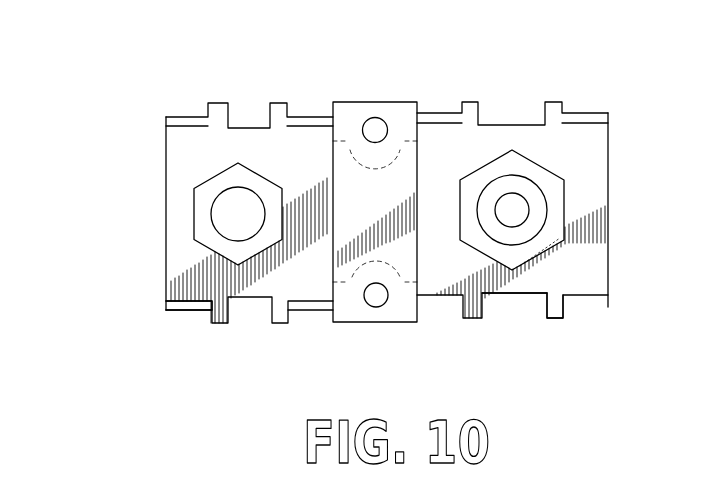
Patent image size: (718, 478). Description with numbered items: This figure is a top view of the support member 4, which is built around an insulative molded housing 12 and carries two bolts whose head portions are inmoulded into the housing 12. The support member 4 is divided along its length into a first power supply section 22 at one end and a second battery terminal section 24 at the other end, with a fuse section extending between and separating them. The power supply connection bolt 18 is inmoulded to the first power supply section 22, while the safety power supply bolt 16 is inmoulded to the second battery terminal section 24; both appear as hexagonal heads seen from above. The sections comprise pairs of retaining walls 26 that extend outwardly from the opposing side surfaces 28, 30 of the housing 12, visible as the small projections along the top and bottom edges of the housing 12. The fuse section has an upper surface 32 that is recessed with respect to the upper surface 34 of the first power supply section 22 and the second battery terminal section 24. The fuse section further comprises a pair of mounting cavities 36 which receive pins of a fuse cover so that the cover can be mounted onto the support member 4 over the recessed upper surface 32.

The support member 4 is at (96, 112).
The insulative molded housing 12 is at (580, 265).
The safety power supply bolt 16 is at (228, 218).
The power supply connection bolt 18 is at (512, 208).
The first power supply section 22 is at (514, 294).
The second battery terminal section 24 is at (185, 311).
The retaining walls 26 is at (553, 319).
The side surface 28 is at (390, 321).
The side surface 30 is at (185, 115).
The upper surface of the fuse section 32 is at (347, 316).
The upper surface of the sections 34 is at (597, 190).
The mounting cavities 36 is at (374, 128).